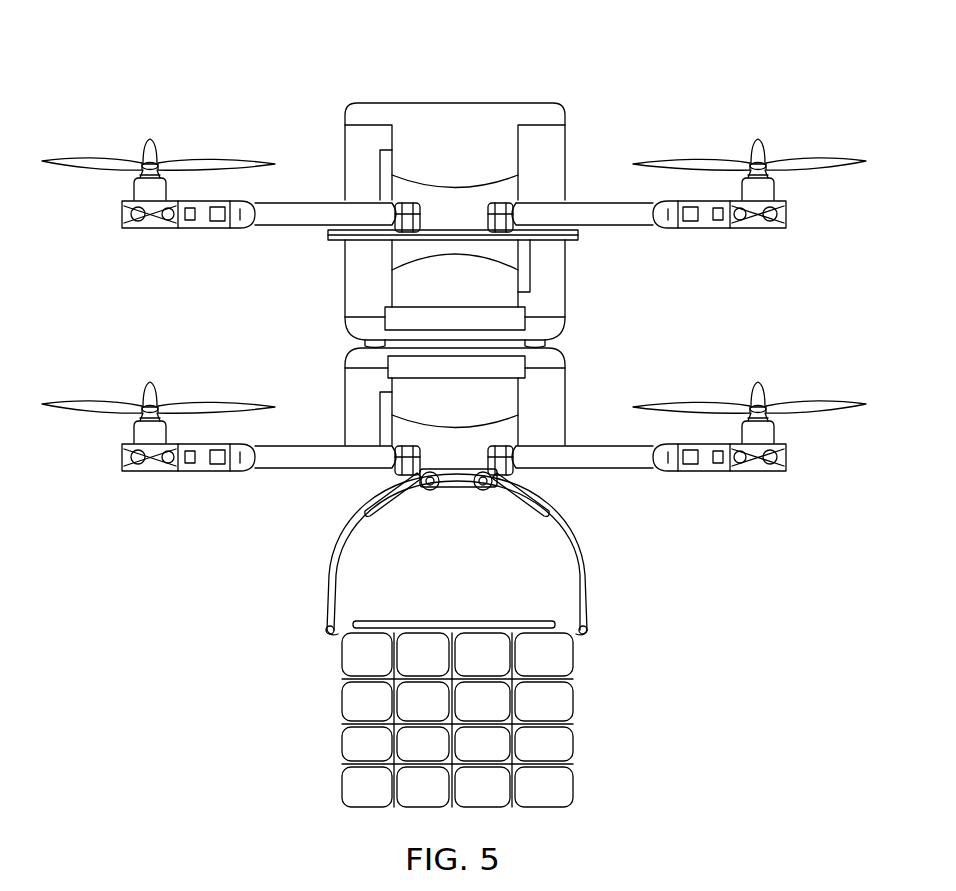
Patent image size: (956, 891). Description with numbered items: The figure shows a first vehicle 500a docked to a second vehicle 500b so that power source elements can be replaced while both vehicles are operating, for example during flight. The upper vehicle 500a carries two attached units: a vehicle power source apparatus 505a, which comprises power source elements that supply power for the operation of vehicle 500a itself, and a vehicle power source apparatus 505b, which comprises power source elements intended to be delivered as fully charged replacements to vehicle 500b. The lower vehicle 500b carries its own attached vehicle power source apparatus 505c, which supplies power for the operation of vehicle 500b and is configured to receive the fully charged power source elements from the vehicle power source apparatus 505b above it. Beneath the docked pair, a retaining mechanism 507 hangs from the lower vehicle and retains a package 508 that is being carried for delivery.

The vehicle 500a is at (262, 97).
The vehicle 500b is at (310, 366).
The vehicle power source apparatus 505a is at (423, 103).
The vehicle power source apparatus 505b is at (566, 288).
The vehicle power source apparatus 505c is at (566, 385).
The retaining mechanism 507 is at (332, 563).
The package 508 is at (345, 702).